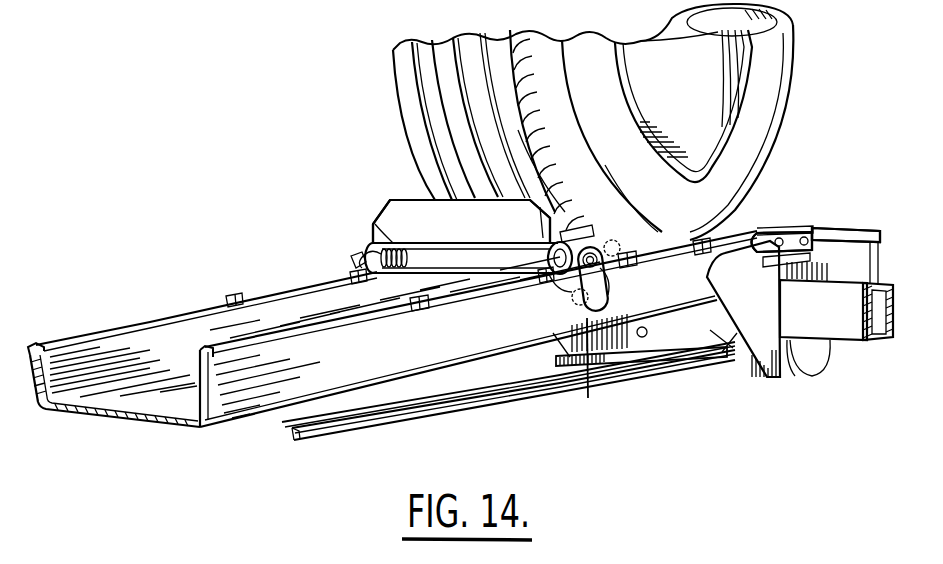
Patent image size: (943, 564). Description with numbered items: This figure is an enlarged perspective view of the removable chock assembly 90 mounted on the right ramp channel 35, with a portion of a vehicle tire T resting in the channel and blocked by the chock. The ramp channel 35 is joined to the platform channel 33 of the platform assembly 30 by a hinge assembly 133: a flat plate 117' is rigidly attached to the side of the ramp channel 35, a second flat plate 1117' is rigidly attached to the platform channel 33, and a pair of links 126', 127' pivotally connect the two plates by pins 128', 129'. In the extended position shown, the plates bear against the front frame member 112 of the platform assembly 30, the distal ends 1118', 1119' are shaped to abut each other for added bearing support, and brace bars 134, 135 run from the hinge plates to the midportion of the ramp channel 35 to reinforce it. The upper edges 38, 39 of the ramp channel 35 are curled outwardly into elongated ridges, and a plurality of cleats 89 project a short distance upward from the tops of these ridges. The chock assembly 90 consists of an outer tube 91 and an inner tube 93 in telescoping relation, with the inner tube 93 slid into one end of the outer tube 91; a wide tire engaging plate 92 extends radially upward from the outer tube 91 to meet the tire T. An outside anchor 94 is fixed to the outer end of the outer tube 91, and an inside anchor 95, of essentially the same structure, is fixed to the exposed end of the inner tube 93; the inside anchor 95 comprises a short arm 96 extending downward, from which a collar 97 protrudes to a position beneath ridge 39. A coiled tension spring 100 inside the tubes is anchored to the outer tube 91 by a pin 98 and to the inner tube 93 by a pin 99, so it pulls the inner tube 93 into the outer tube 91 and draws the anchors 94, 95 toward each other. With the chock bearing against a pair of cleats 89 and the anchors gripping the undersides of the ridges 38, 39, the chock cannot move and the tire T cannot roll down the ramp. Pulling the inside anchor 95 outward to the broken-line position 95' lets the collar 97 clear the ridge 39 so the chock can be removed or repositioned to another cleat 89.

The tire T is at (793, 66).
The platform assembly 30 is at (892, 240).
The platform channel 33 is at (848, 238).
The ramp channel 35 is at (122, 418).
The upper edge (ridge) 38 is at (25, 349).
The upper edge (ridge) 39 is at (262, 355).
The cleats 89 is at (226, 300).
The chock assembly 90 is at (386, 197).
The outer tube 91 is at (413, 280).
The tire engaging plate 92 is at (420, 199).
The inner tube 93 is at (570, 226).
The outside anchor 94 is at (357, 253).
The inside anchor 95 is at (638, 273).
The extended position of inside anchor 95' is at (641, 318).
The short arm 96 is at (581, 306).
The collar 97 is at (588, 398).
The pin 98 is at (351, 262).
The pin 99 is at (563, 289).
The coiled tension spring 100 is at (392, 240).
The front frame member 112 is at (812, 351).
The flat plate 117' is at (646, 363).
The link 126' is at (795, 198).
The link 127' is at (812, 216).
The pin 128' is at (813, 296).
The pin 129' is at (843, 311).
The hinge assembly 133 is at (818, 211).
The brace bar 134 is at (472, 413).
The brace bar 135 is at (285, 422).
The flat plate 1117' is at (831, 376).
The distal end 1118' is at (830, 388).
The distal end 1119' is at (726, 398).